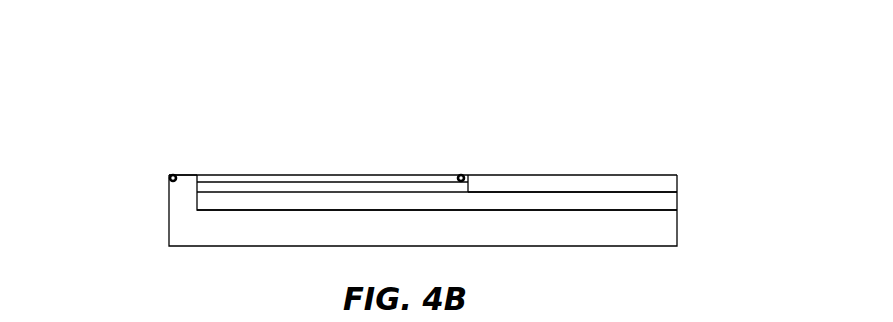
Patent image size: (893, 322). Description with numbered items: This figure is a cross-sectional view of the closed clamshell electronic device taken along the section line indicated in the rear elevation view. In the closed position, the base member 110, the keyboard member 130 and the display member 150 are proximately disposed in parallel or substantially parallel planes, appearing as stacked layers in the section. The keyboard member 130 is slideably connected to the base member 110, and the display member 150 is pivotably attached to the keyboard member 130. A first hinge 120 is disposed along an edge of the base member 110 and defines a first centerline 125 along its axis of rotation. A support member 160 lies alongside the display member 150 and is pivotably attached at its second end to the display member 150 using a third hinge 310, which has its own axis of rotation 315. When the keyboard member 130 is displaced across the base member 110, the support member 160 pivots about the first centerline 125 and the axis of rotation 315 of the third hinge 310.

The base member 110 is at (677, 234).
The keyboard member 130 is at (677, 197).
The support member 160 is at (258, 173).
The display member 150 is at (538, 174).
The third hinge 310 is at (466, 174).
The axis of rotation 315 is at (461, 174).
The first hinge 120 is at (188, 175).
The first centerline 125 is at (170, 181).